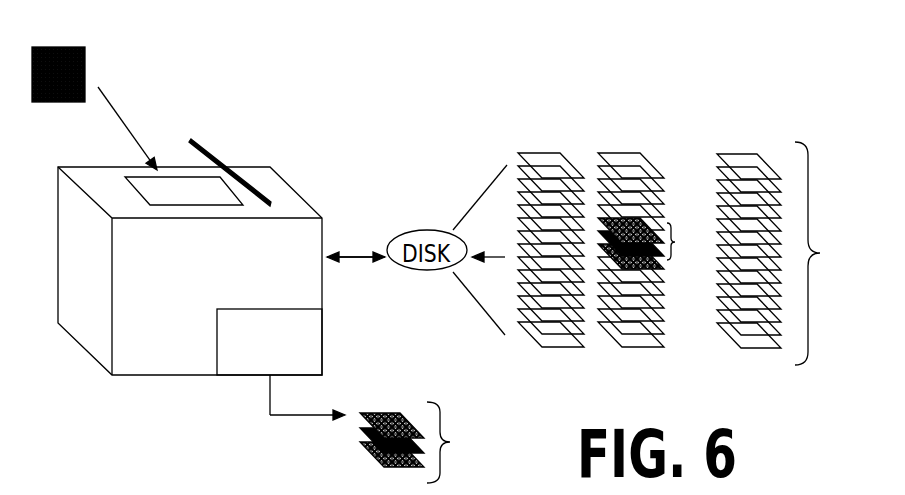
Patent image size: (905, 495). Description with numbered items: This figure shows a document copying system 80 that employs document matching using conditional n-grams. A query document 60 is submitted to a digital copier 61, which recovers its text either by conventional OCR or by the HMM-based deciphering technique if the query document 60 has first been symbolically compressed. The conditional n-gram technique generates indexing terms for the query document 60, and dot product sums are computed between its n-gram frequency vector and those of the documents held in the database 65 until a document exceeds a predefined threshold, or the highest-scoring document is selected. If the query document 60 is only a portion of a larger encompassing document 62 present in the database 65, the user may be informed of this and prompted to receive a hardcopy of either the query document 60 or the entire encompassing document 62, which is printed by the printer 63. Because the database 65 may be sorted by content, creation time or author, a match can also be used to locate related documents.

The query document 60 is at (58, 102).
The digital copier 61 is at (139, 368).
The larger encompassing document 62 is at (678, 240).
The printer 63 is at (308, 368).
The database 65 is at (684, 253).
The document copying system 80 is at (415, 73).